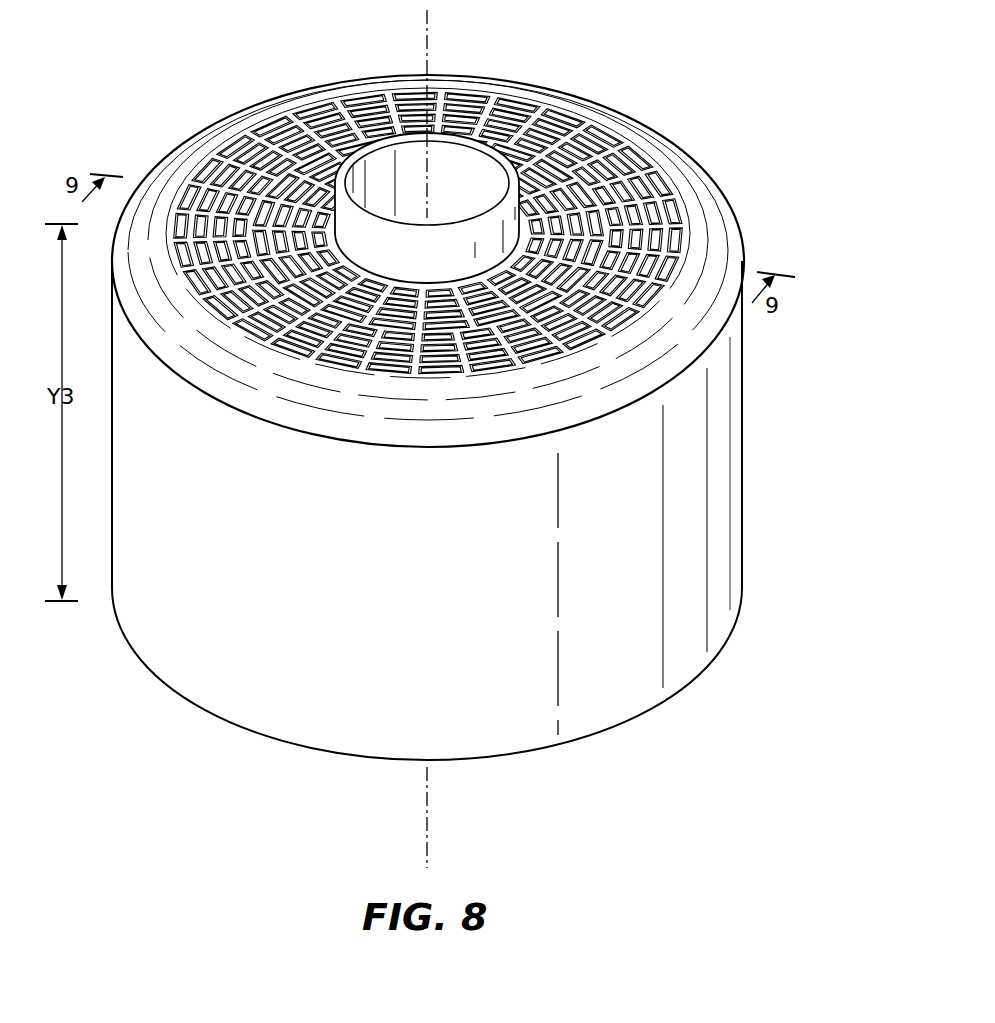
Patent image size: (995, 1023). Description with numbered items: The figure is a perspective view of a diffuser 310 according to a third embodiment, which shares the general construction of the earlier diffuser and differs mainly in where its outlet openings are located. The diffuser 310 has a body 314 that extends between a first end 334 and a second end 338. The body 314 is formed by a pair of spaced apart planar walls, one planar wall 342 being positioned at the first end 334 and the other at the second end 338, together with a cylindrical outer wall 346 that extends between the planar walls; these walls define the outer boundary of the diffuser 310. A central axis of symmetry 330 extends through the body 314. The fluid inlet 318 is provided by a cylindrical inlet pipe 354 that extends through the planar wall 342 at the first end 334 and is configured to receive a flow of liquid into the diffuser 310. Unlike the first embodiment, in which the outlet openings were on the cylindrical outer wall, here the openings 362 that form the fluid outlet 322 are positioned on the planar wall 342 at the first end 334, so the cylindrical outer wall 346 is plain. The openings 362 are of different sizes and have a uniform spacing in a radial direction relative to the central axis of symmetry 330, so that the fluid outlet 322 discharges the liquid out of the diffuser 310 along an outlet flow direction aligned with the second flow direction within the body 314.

The diffuser 310 is at (718, 76).
The body 314 is at (692, 433).
The fluid inlet 318 is at (451, 172).
The fluid outlet 322 is at (157, 122).
The central axis of symmetry 330 is at (426, 826).
The first end 334 is at (712, 247).
The second end 338 is at (678, 692).
The planar wall 342 is at (690, 206).
The cylindrical outer wall 346 is at (718, 517).
The inlet pipe 354 is at (488, 235).
The openings 362 is at (320, 120).